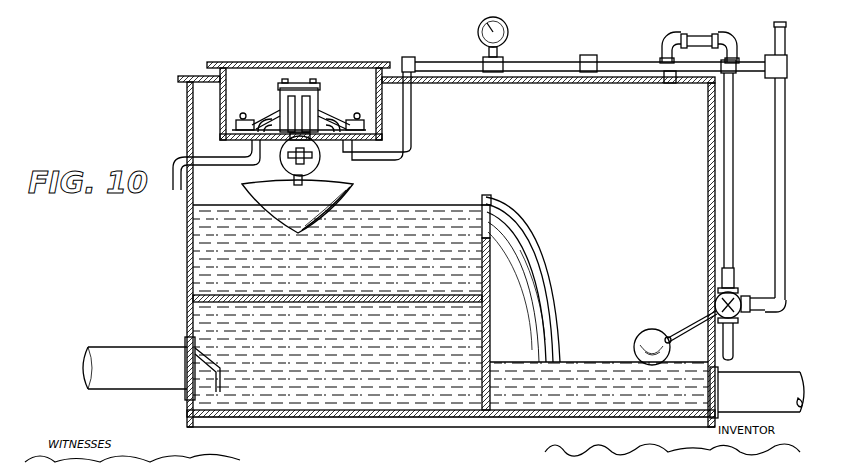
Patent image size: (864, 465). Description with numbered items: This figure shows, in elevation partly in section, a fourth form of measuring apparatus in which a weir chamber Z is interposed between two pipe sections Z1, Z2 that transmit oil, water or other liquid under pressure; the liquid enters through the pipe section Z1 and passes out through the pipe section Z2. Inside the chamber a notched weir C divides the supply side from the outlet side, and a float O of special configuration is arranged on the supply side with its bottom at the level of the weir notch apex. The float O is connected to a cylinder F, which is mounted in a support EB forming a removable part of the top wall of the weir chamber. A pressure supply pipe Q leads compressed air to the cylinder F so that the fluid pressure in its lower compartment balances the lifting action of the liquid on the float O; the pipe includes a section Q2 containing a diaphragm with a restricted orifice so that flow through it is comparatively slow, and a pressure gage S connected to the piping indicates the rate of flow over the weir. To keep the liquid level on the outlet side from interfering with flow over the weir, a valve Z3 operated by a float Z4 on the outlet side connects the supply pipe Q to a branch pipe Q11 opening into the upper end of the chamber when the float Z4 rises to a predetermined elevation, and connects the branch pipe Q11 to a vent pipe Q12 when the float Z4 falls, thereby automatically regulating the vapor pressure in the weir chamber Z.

The weir chamber Z is at (187, 267).
The pipe section Z1 is at (151, 368).
The pipe section Z2 is at (757, 392).
The valve Z3 is at (738, 292).
The float Z4 is at (649, 330).
The support EB is at (220, 93).
The cylinder F is at (274, 106).
The float O is at (297, 183).
The notched weir C is at (491, 325).
The pressure gage S is at (478, 30).
The pressure supply pipe Q is at (786, 38).
The pipe section Q2 is at (591, 55).
The branch pipe Q11 is at (733, 168).
The vent pipe Q12 is at (737, 340).